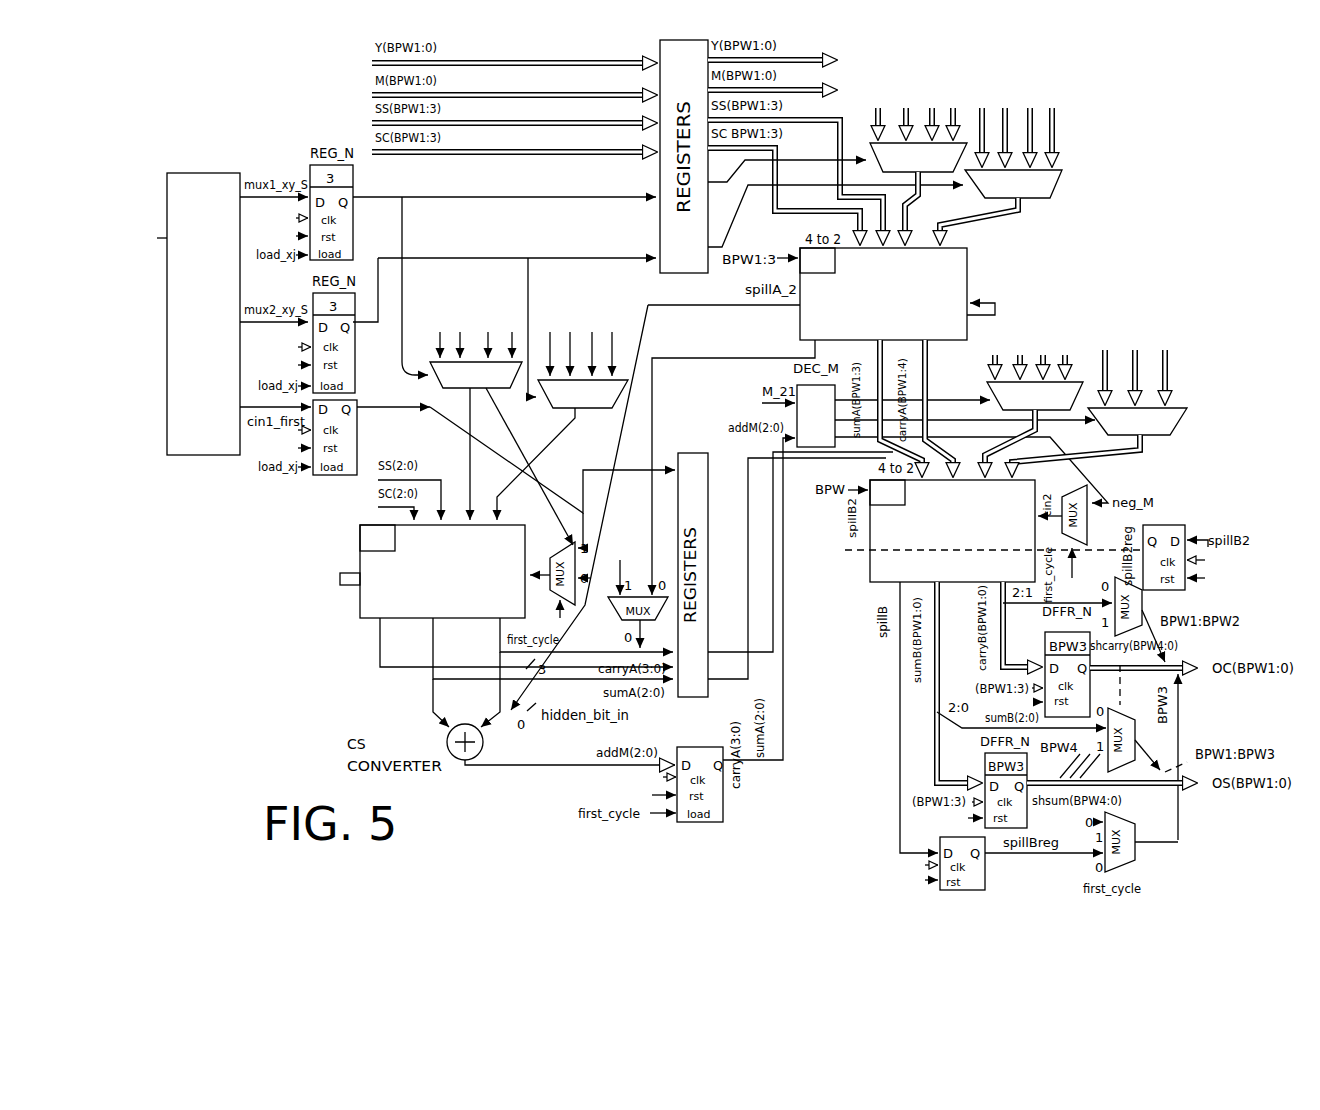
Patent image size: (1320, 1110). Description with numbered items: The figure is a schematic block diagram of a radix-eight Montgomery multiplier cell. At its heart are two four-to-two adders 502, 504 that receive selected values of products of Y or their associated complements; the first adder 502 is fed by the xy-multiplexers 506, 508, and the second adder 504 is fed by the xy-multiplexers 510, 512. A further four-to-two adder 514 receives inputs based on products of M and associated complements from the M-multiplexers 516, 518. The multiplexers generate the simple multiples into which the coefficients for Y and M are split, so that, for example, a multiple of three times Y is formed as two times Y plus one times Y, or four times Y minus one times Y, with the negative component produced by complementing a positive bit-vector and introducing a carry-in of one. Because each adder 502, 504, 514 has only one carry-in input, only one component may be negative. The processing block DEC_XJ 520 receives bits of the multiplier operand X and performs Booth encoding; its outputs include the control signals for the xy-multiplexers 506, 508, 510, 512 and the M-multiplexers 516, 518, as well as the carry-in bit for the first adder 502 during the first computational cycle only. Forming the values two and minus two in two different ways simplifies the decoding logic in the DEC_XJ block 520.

The 4-to-2 adder 502 is at (360, 610).
The 4-to-2 adder 504 is at (968, 277).
The xy-multiplexer 506 is at (500, 388).
The xy-multiplexer 508 is at (625, 378).
The xy-multiplexer 510 is at (1060, 181).
The xy-multiplexer 512 is at (938, 172).
The 4-to-2 adder 514 is at (870, 580).
The M-multiplexer 516 is at (988, 394).
The M-multiplexer 518 is at (1187, 420).
The processing block (DEC_XJ) 520 is at (207, 455).